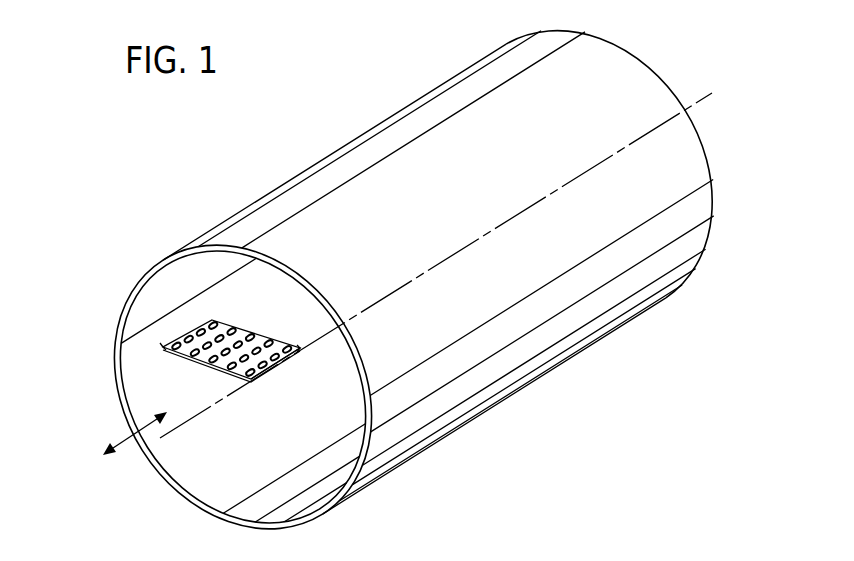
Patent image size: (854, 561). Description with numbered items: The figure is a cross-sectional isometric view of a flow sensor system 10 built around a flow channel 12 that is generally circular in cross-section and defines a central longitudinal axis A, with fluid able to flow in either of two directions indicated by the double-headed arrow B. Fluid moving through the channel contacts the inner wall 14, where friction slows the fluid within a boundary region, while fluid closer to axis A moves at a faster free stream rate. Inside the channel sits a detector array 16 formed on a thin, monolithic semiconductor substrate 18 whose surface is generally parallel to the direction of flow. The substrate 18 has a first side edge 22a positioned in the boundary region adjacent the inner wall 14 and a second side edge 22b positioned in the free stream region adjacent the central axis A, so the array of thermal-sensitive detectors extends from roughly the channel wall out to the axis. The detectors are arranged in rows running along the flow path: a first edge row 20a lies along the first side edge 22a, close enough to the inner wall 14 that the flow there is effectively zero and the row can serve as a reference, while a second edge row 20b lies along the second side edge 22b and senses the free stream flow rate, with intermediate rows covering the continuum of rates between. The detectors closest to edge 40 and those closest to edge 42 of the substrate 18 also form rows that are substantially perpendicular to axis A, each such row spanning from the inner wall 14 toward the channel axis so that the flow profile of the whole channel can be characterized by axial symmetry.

The flow sensor system 10 is at (148, 229).
The flow channel 12 is at (285, 192).
The inner wall 14 is at (195, 467).
The detector array 16 is at (197, 358).
The substrate 18 is at (192, 338).
The first edge row 20a is at (214, 321).
The second edge row 20b is at (286, 345).
The first side edge 22a is at (160, 346).
The second side edge 22b is at (278, 368).
The edge 40 is at (225, 347).
The edge 42 is at (298, 346).
The central longitudinal axis A is at (480, 232).
The double-headed arrow B is at (120, 438).